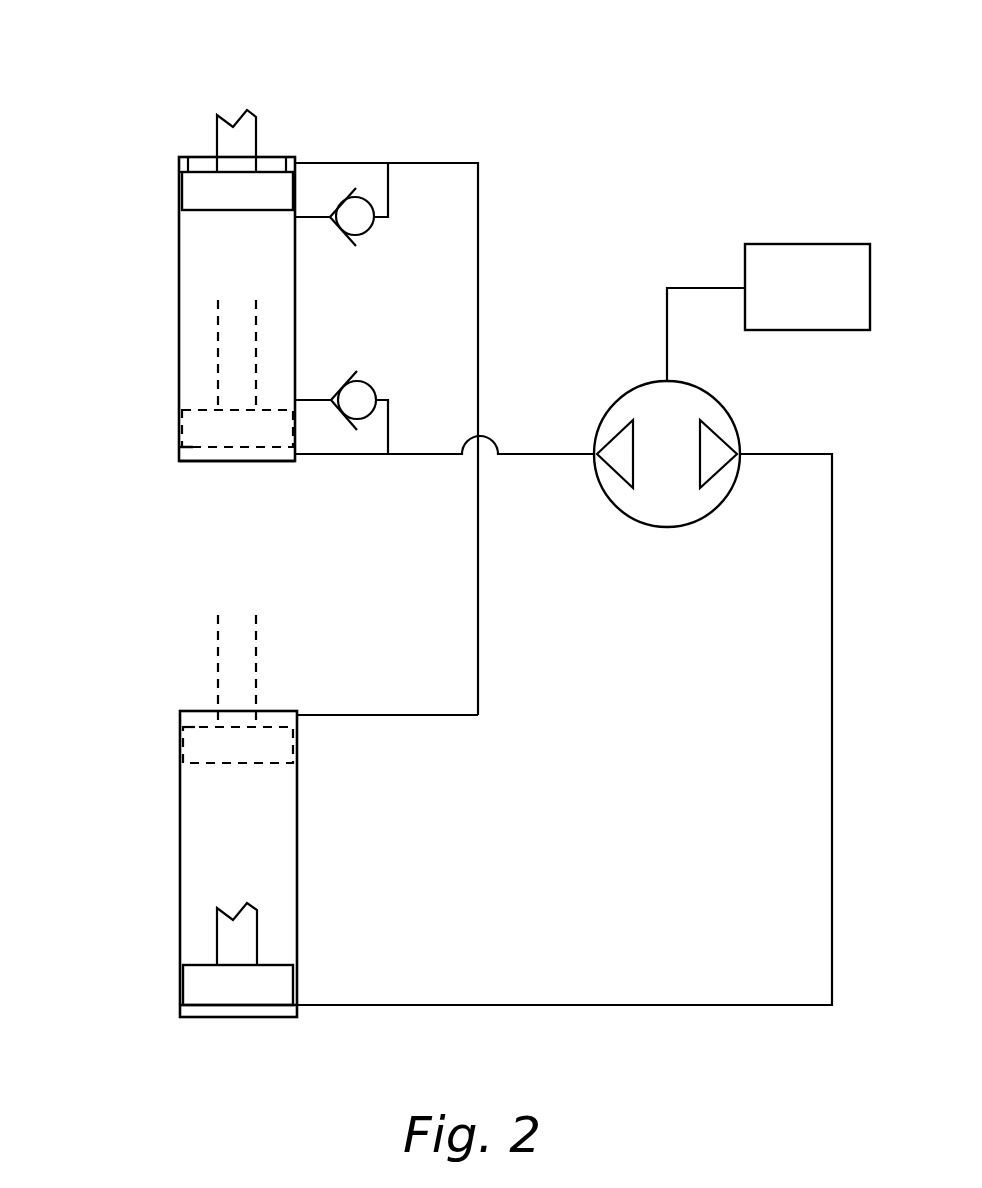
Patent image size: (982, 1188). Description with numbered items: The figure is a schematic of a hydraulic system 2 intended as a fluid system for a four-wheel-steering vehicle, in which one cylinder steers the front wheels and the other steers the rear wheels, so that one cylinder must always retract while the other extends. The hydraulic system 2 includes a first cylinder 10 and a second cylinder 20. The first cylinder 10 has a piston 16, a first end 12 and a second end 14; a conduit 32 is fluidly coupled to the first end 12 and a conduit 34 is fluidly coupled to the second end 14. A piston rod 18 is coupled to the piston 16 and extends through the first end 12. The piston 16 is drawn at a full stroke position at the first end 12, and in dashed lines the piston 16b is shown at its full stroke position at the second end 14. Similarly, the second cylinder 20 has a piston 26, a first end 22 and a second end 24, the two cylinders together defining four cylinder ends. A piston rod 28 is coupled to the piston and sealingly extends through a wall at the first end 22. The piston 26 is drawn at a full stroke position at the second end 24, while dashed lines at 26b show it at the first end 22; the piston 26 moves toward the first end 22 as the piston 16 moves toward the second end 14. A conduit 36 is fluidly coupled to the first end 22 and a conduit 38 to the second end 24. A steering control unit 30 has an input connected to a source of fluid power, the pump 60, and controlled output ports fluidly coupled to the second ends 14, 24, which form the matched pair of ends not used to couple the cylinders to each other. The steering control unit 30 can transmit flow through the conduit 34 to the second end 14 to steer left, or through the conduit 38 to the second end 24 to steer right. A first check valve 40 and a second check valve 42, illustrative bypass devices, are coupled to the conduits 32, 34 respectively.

The hydraulic system 2 is at (718, 129).
The first cylinder 10 is at (178, 280).
The first end 12 is at (178, 157).
The second end 14 is at (180, 450).
The piston 16 is at (187, 157).
The piston 16b is at (202, 410).
The piston rod 18 is at (215, 143).
The second cylinder 20 is at (178, 827).
The first end 22 is at (180, 713).
The second end 24 is at (180, 1005).
The piston 26 is at (205, 965).
The piston 26b is at (195, 723).
The piston rod 28 is at (213, 692).
The steering control unit 30 is at (633, 393).
The conduit 32 is at (325, 162).
The conduit 34 is at (324, 456).
The conduit 36 is at (332, 715).
The conduit 38 is at (342, 1005).
The first check valve 40 is at (377, 226).
The second check valve 42 is at (377, 390).
The pump 60 is at (771, 243).